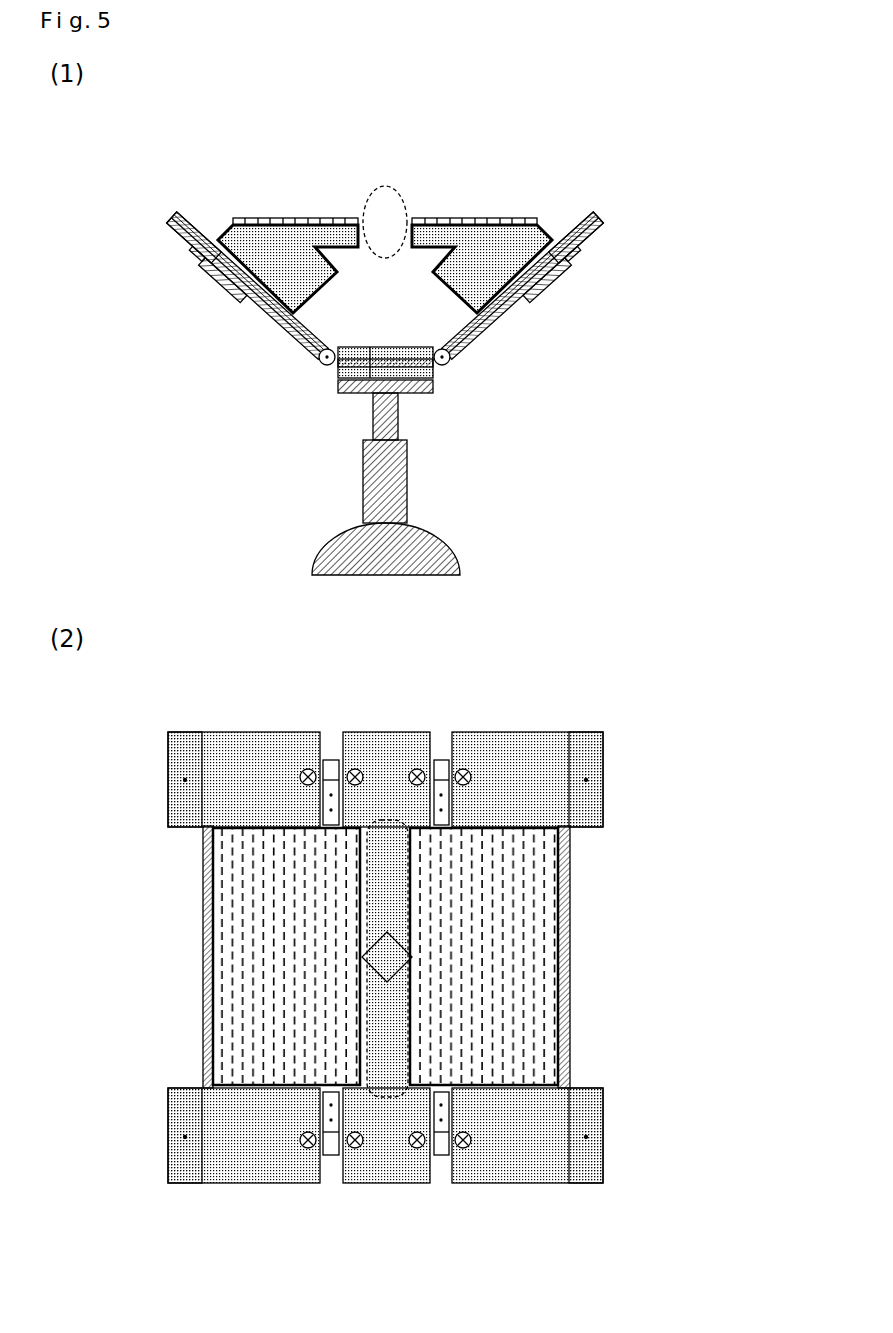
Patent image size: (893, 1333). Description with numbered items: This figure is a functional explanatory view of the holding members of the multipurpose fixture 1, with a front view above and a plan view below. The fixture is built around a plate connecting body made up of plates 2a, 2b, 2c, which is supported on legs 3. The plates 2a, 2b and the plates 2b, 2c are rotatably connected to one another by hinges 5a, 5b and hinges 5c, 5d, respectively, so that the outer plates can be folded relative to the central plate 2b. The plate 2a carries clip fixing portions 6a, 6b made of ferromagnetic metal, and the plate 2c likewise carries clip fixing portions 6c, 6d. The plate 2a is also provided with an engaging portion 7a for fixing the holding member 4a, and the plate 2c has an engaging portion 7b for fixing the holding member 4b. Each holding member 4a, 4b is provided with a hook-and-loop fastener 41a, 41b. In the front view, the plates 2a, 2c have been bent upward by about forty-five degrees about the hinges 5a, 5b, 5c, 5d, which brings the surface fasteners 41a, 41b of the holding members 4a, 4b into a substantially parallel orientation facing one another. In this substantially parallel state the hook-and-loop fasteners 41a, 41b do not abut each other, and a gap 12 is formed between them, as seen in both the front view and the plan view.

The multipurpose fixture 1 is at (677, 168).
The gap 12 is at (384, 186).
The plate 2a is at (282, 323).
The plate 2b is at (372, 355).
The plate 2c is at (497, 323).
The legs 3 is at (385, 492).
The holding member 4a is at (264, 247).
The holding member 4b is at (507, 245).
The hook-and-loop fastener 41a is at (321, 217).
The hook-and-loop fastener 41b is at (445, 217).
The hinge 5a is at (337, 758).
The hinge 5b is at (320, 365).
The hinge 5c is at (443, 758).
The hinge 5d is at (450, 368).
The clip fixing portion 6a is at (185, 758).
The clip fixing portion 6b is at (170, 225).
The clip fixing portion 6c is at (587, 760).
The clip fixing portion 6d is at (610, 222).
The engaging portion 7a is at (220, 283).
The engaging portion 7b is at (552, 283).